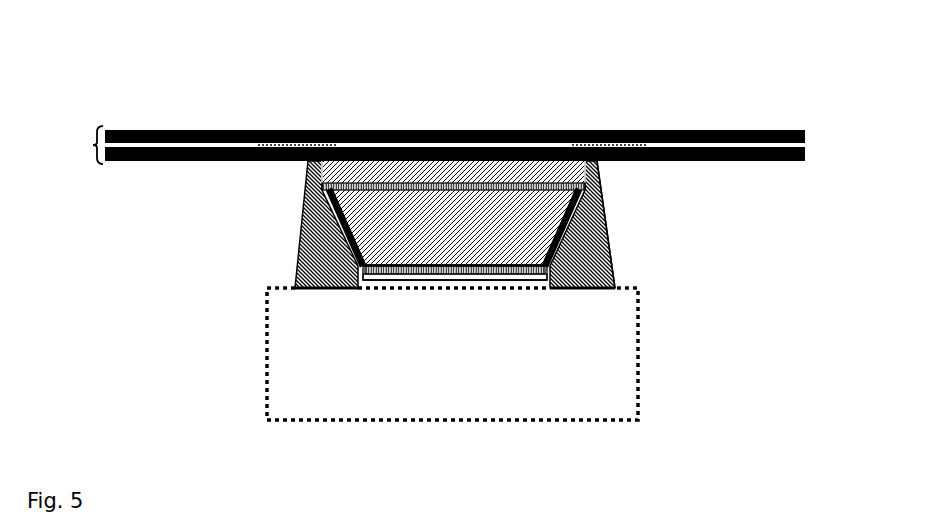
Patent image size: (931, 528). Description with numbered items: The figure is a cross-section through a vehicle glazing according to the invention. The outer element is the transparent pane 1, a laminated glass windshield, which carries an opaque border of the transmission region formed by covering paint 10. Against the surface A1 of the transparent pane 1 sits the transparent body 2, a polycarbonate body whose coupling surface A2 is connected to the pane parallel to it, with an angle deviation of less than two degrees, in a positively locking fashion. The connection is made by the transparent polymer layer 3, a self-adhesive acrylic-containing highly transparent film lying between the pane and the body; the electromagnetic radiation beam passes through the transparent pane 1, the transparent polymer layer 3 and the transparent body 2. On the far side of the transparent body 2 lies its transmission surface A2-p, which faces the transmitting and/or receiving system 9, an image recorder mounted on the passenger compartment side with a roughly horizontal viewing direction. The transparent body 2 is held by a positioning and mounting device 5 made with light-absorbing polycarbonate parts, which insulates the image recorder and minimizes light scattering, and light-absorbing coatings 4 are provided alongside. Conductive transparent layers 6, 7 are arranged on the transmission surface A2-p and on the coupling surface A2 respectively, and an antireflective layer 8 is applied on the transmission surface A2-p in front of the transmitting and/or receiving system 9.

The transparent pane 1 is at (435, 109).
The transparent body 2 is at (388, 259).
The transparent polymer layer 3 is at (375, 166).
The light-absorbing coatings 4 is at (330, 222).
The positioning and mounting device 5 is at (608, 252).
The conductive transparent layer 6 is at (411, 273).
The conductive transparent layer 7 is at (589, 230).
The antireflective layer 8 is at (441, 282).
The transmitting and/or receiving system 9 is at (545, 413).
The covering paint 10 is at (605, 130).
The surface of the transparent pane A1 is at (475, 127).
The coupling surface A2 is at (434, 173).
The transmission surface A2-p is at (473, 288).